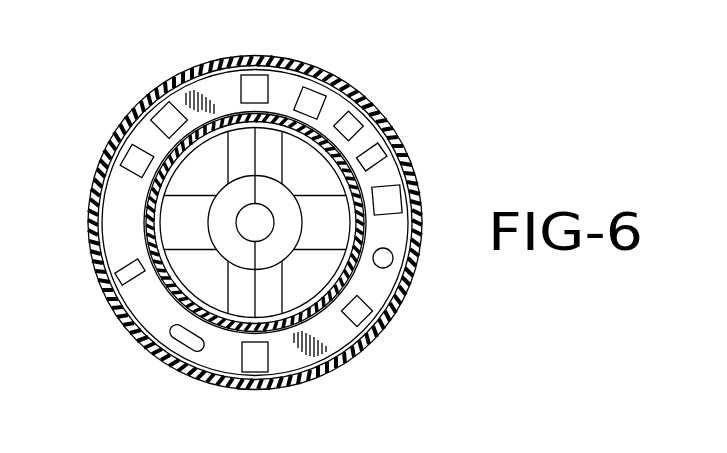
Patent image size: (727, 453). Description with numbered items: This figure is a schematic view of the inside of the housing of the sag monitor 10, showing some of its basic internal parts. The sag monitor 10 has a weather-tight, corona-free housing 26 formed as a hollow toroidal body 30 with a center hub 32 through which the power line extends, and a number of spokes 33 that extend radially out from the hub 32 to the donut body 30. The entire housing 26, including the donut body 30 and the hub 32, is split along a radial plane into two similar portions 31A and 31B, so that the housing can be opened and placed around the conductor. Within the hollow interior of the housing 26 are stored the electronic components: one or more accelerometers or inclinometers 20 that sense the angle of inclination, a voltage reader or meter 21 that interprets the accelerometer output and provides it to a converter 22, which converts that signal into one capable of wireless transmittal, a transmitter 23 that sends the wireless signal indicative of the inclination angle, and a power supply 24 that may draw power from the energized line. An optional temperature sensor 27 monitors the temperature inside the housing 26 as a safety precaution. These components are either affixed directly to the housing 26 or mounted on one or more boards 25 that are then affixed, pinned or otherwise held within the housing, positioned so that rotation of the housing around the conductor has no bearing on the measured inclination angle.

The sag monitor 10 is at (512, 95).
The accelerometer or inclinometer 20 is at (162, 116).
The voltage reader or meter 21 is at (353, 125).
The converter 22 is at (131, 153).
The transmitter 23 is at (391, 195).
The power supply 24 is at (310, 100).
The board or frame 25 is at (343, 335).
The housing 26 is at (172, 77).
The temperature sensor 27 is at (385, 261).
The toroidal body 30 is at (213, 60).
The first housing portion 31A is at (203, 383).
The second housing portion 31B is at (308, 383).
The center hub 32 is at (228, 247).
The spokes 33 is at (178, 225).